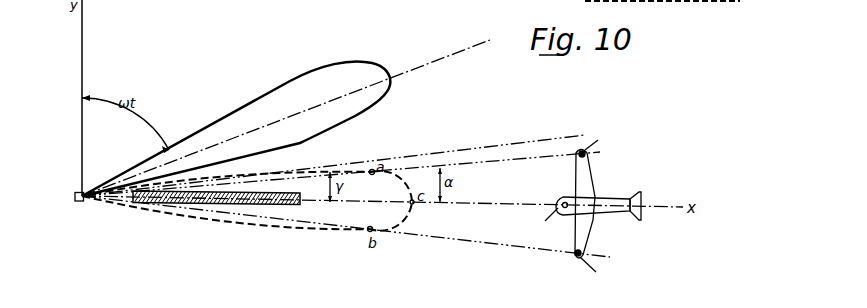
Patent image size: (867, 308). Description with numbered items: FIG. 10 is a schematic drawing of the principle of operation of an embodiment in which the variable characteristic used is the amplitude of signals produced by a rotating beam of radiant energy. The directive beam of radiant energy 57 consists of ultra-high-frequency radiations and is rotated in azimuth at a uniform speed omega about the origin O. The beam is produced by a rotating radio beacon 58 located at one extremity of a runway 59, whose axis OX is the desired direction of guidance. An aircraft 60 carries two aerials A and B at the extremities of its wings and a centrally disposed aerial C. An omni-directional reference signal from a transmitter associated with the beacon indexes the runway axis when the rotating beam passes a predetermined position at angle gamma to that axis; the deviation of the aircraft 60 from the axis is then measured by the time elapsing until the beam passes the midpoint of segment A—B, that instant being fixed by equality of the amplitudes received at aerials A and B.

The directive beam of radiant energy 57 is at (282, 98).
The rotating radio beacon 58 is at (80, 202).
The runway 59 is at (258, 205).
The aircraft 60 is at (610, 202).